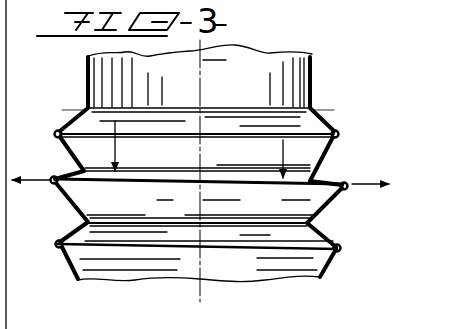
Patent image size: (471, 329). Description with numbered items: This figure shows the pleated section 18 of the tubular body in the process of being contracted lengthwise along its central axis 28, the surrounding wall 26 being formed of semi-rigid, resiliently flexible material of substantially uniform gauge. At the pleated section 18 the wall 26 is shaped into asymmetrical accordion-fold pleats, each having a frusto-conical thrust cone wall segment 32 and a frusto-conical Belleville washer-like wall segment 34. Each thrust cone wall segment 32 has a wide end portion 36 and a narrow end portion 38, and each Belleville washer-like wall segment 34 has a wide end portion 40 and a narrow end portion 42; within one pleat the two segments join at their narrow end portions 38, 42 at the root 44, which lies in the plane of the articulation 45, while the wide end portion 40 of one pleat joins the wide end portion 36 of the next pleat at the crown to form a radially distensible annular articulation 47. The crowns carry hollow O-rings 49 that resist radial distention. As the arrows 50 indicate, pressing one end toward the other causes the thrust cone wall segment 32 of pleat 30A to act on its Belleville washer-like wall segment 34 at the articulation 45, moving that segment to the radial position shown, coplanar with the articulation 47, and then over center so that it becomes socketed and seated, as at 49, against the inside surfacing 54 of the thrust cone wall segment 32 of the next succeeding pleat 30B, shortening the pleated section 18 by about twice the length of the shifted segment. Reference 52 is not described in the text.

The pleated section 18 is at (349, 129).
The encompassing wall 26 is at (76, 124).
The central axis 28 is at (229, 52).
The pleat 30A is at (341, 154).
The next succeeding pleat 30B is at (352, 240).
The thrust cone wall segment 32 is at (70, 267).
The Belleville washer-like wall segment 34 is at (68, 237).
The wide end portion of thrust cone wall segment 36 is at (217, 139).
The narrow end portion of thrust cone wall segment 38 is at (207, 112).
The wide end portion of Belleville washer-like wall segment 40 is at (187, 132).
The narrow end portion of Belleville washer-like wall segment 42 is at (125, 119).
The root 44 is at (80, 221).
The articulation 45 is at (131, 222).
The annular articulation 47 is at (50, 160).
The hollow O-ring 49 is at (336, 131).
The arrows 50 is at (118, 148).
The radial direction 52 is at (40, 178).
The inside surfacing 54 is at (82, 206).